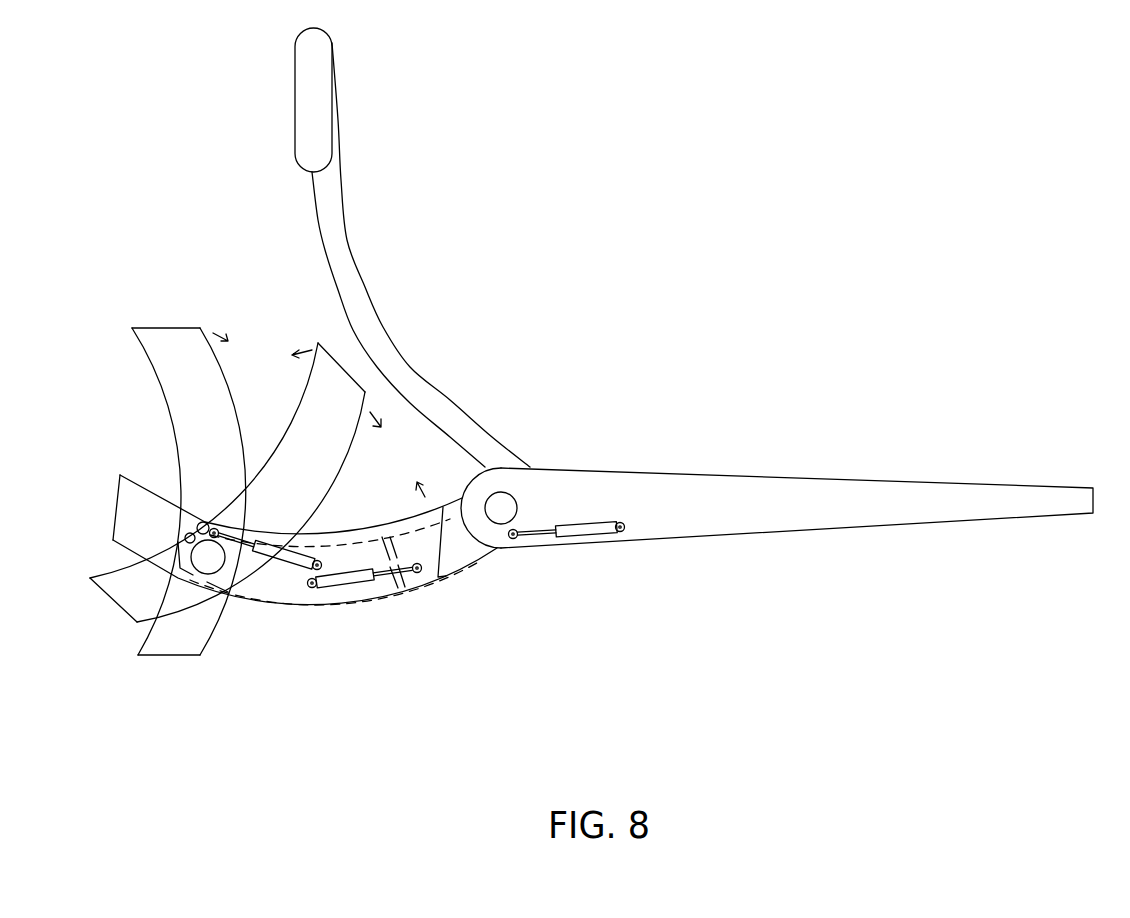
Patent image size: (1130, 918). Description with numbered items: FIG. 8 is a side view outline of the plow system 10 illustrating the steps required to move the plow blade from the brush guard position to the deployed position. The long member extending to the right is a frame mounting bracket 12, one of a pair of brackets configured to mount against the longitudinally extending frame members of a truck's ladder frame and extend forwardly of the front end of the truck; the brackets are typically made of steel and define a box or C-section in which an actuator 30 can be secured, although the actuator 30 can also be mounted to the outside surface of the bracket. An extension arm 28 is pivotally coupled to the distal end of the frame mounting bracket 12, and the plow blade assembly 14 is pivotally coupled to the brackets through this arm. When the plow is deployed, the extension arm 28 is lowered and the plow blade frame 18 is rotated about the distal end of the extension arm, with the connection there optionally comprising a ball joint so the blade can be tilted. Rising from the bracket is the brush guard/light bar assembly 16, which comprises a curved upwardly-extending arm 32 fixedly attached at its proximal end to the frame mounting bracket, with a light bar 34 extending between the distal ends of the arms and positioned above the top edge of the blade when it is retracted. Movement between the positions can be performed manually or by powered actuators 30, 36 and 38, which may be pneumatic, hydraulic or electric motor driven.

The plow system 10 is at (530, 157).
The frame mounting bracket 12 is at (754, 520).
The plow blade assembly 14 is at (225, 684).
The brush guard/light bar assembly 16 is at (338, 245).
The plow blade frame 18 is at (176, 340).
The extension arm 28 is at (407, 592).
The actuator 30 is at (583, 537).
The curved upwardly-extending arm 32 is at (368, 327).
The light bar 34 is at (322, 118).
The actuator 36 is at (279, 562).
The actuator 38 is at (343, 583).